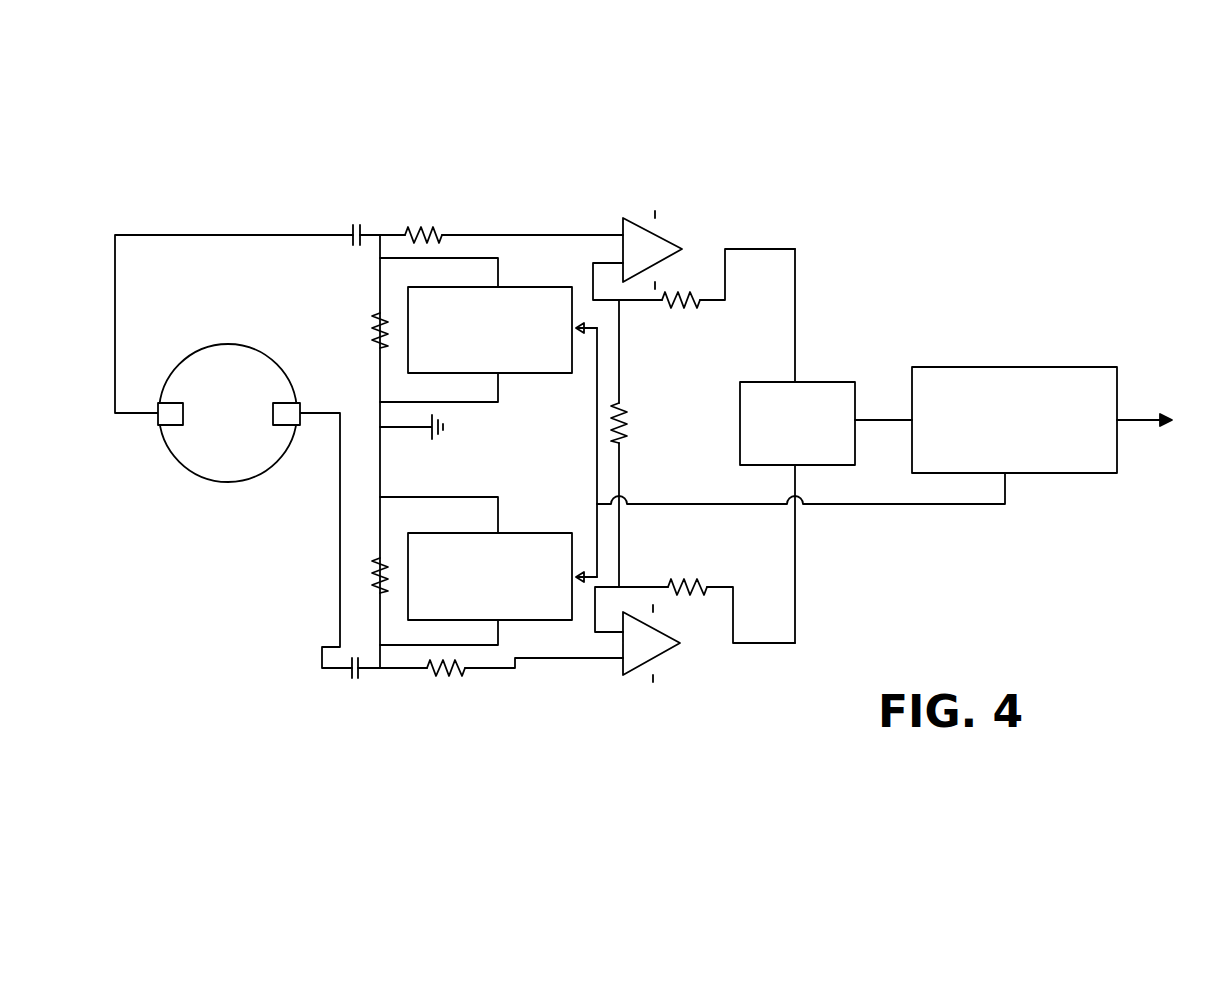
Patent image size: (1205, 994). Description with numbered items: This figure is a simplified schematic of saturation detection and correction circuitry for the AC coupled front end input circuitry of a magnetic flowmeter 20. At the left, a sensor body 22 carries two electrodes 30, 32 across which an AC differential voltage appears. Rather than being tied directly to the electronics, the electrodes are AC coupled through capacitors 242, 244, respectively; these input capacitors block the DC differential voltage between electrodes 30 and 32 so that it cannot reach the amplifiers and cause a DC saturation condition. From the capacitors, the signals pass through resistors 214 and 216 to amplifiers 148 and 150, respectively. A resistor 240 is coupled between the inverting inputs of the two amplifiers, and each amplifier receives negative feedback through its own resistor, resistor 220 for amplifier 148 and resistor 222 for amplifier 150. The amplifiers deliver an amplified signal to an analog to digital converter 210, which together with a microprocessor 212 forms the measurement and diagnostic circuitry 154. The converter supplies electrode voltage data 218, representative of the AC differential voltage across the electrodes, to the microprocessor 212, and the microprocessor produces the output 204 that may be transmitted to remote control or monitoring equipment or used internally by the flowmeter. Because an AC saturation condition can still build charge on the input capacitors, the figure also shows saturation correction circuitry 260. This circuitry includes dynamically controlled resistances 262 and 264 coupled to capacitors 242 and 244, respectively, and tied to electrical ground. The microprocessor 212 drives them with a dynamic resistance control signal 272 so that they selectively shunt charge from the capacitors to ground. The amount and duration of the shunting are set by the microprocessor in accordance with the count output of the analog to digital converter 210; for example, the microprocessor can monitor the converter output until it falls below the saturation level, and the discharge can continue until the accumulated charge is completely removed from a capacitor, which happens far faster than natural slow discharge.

The magnetic flowmeter 20 is at (797, 208).
The electrochemical sensor 22 is at (211, 345).
The electrode 30 is at (175, 425).
The electrode 32 is at (283, 425).
The capacitor 242 is at (356, 231).
The resistor 214 is at (430, 227).
The amplifier 148 is at (666, 236).
The resistor 220 is at (698, 305).
The resistor 240 is at (622, 442).
The analog to digital converter 210 is at (740, 432).
The electrode voltage data 218 is at (877, 415).
The microprocessor 212 is at (1013, 367).
The measurement and diagnostic circuitry 154 is at (1008, 300).
The output 204 is at (1140, 417).
The dynamically controlled resistance 262 is at (552, 373).
The dynamically controlled resistance 264 is at (540, 533).
The resistor 222 is at (709, 590).
The amplifier 150 is at (668, 655).
The resistor 216 is at (460, 676).
The capacitor 244 is at (352, 674).
The saturation correction circuitry 260 is at (297, 575).
The dynamic resistance control signal 272 is at (832, 508).